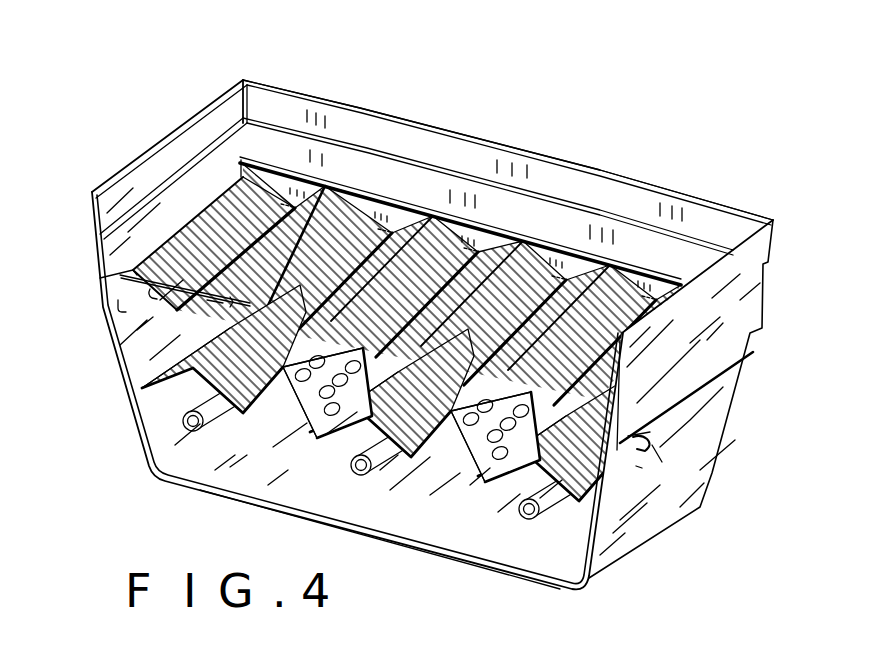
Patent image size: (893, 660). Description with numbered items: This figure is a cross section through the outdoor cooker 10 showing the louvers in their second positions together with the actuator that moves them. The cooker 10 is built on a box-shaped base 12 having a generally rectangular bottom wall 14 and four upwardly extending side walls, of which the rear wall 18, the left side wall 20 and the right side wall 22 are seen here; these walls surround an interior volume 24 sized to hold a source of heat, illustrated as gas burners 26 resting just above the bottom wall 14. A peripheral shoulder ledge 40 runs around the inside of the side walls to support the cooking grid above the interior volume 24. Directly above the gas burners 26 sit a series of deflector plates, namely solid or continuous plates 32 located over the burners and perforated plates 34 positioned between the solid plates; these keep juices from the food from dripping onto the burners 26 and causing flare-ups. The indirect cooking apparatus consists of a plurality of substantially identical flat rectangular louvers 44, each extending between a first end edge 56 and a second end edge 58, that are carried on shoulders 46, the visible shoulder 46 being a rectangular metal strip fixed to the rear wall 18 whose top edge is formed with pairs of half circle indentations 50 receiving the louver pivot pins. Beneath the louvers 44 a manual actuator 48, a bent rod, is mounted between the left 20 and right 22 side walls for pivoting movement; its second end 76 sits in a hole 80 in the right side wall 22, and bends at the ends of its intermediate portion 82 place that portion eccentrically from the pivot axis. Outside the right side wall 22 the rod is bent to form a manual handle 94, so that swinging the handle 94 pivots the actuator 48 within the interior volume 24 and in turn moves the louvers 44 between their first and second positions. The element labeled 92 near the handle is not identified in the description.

The cooker 10 is at (445, 104).
The base 12 is at (738, 470).
The bottom wall 14 is at (307, 488).
The rear wall 18 is at (573, 190).
The left side wall 20 is at (170, 153).
The right side wall 22 is at (740, 300).
The interior volume 24 is at (193, 463).
The gas burners 26 is at (185, 407).
The solid plates 32 is at (193, 367).
The perforated plates 34 is at (482, 430).
The peripheral shoulder ledge 40 is at (138, 207).
The louvers 44 is at (293, 177).
The shoulders 46 is at (390, 193).
The manual actuator 48 is at (671, 464).
The half circle indentations 50 is at (258, 175).
The first end edge 56 is at (198, 318).
The second end edge 58 is at (295, 208).
The second end 76 is at (623, 440).
The hole 80 is at (652, 428).
The intermediate portion 82 is at (363, 392).
The hook 92 is at (652, 441).
The manual handle 94 is at (643, 465).